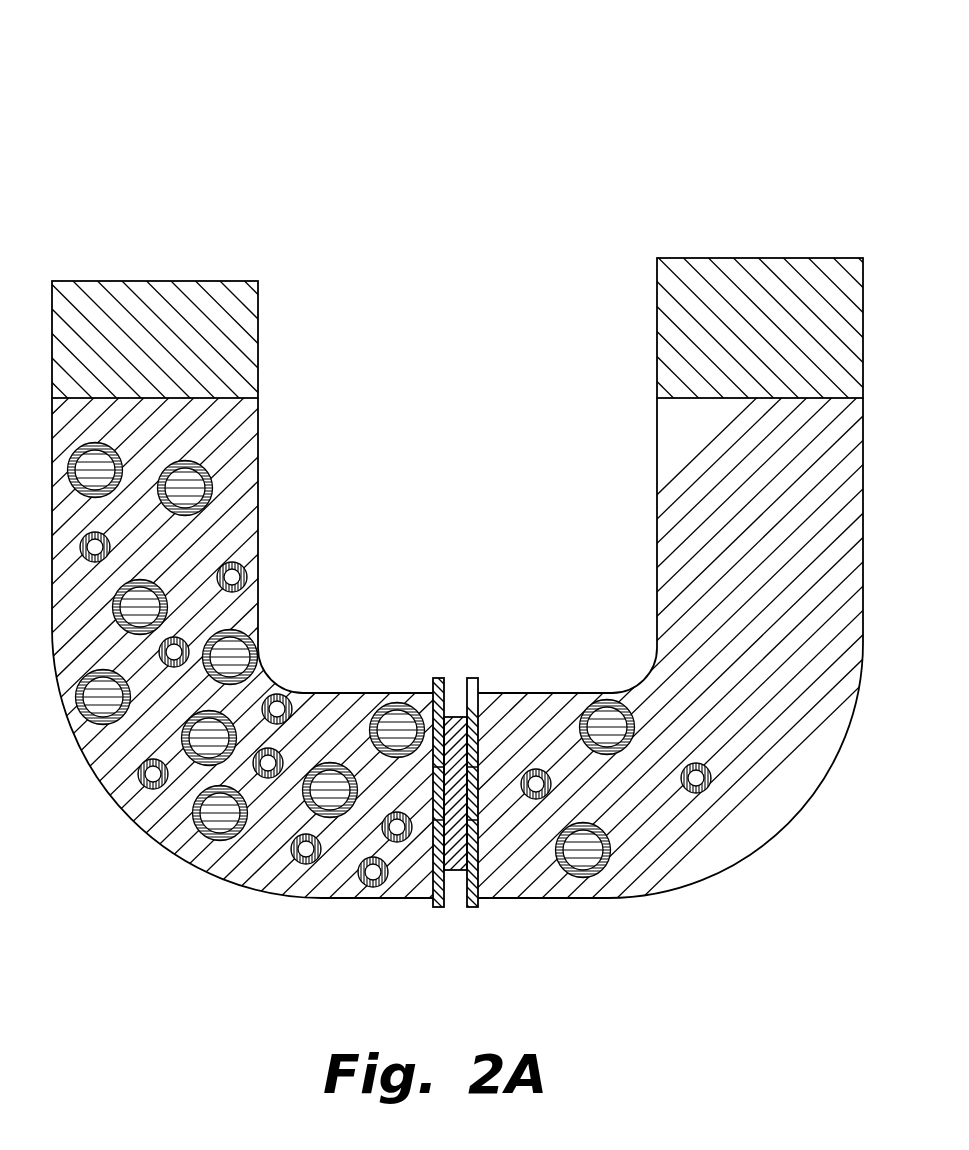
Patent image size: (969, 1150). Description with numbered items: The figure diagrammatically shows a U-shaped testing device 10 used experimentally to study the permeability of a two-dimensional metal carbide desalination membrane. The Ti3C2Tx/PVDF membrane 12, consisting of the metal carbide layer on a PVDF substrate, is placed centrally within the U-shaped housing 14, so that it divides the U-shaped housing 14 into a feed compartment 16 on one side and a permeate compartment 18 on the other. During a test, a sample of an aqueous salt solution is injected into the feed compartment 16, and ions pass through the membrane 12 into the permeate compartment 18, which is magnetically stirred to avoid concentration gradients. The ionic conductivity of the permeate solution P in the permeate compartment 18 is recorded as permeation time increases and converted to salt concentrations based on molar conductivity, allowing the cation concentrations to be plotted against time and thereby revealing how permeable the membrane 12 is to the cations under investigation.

The U-shaped testing device 10 is at (117, 60).
The Ti3C2Tx/PVDF membrane 12 is at (457, 678).
The U-shaped housing 14 is at (782, 828).
The feed compartment 16 is at (158, 272).
The permeate compartment 18 is at (769, 246).
The permeate solution P is at (232, 518).